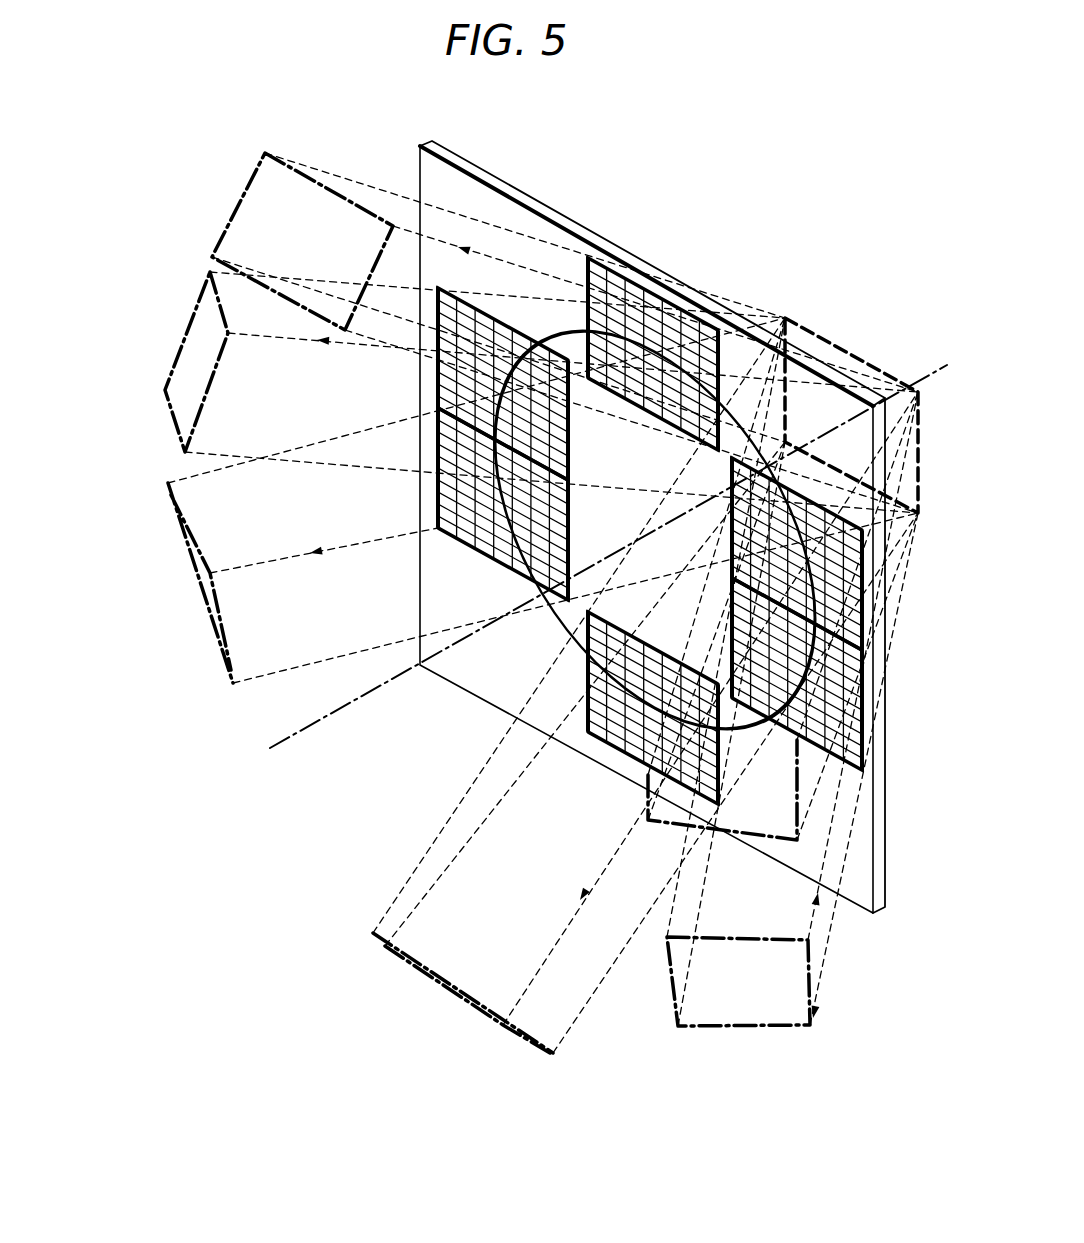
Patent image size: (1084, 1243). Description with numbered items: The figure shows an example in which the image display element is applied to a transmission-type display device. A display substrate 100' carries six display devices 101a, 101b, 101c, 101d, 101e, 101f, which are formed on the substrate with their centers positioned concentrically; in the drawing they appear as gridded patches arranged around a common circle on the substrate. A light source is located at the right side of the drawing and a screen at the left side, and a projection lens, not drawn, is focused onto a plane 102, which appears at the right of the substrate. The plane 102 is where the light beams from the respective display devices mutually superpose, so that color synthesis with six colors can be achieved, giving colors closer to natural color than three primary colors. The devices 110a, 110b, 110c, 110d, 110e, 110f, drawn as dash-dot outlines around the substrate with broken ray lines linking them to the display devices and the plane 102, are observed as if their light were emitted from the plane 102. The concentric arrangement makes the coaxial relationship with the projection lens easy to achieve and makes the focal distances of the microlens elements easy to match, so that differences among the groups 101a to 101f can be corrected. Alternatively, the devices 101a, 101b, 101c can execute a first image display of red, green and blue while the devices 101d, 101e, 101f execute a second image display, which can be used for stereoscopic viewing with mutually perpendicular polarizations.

The display substrate 100' is at (658, 563).
The display device 101a is at (633, 277).
The display device 101b is at (868, 610).
The display device 101c is at (860, 770).
The display device 101d is at (610, 746).
The display device 101e is at (470, 546).
The display device 101f is at (438, 372).
The plane 102 is at (833, 344).
The device 110a is at (240, 194).
The device 110b is at (757, 836).
The device 110c is at (735, 1027).
The device 110d is at (460, 997).
The device 110e is at (220, 646).
The device 110f is at (184, 341).